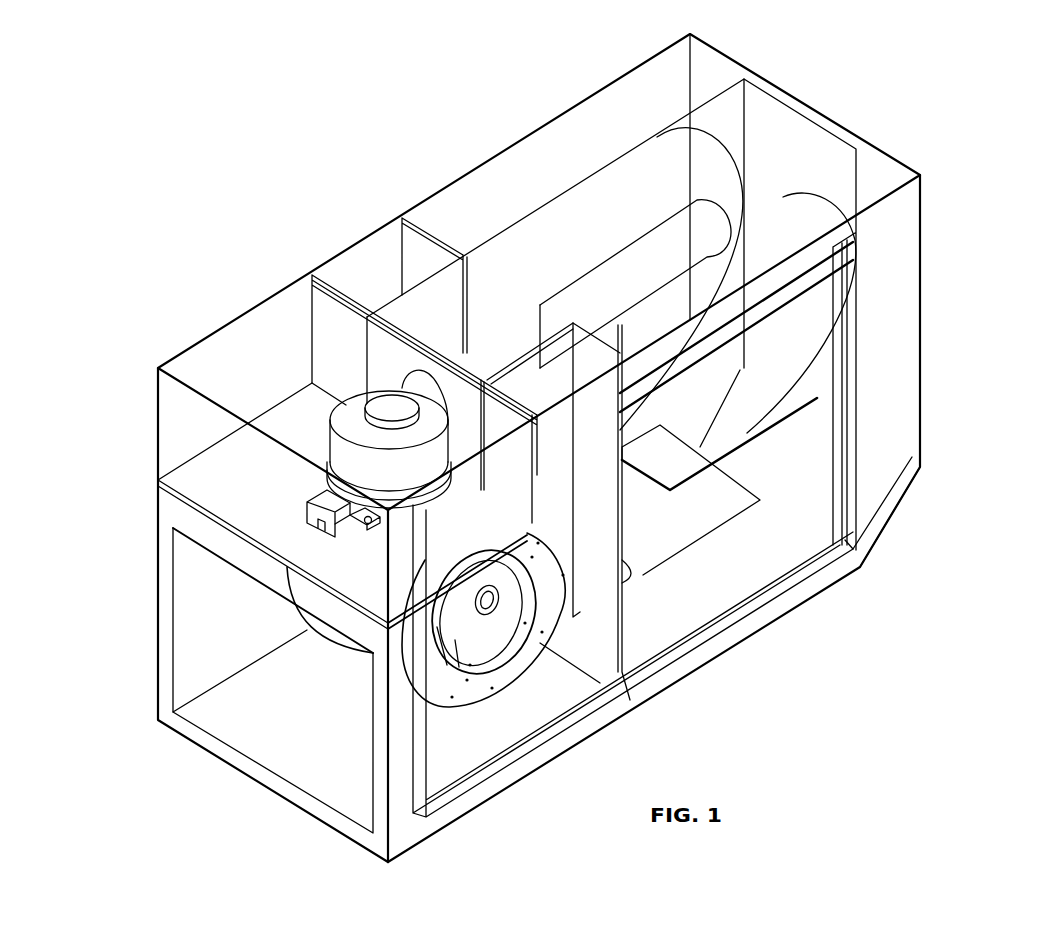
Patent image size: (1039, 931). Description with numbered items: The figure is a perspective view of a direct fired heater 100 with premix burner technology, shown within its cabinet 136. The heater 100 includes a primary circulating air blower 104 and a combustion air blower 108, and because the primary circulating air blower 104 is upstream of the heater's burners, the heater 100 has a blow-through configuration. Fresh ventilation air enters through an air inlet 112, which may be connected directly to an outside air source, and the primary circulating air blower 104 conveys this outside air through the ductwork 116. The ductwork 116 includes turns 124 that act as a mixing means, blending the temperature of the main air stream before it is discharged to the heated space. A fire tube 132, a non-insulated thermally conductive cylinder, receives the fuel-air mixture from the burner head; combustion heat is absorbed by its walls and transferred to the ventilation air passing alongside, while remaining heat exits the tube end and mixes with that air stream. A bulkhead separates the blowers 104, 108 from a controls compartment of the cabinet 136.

The heater 100 is at (148, 108).
The primary circulating air blower 104 is at (500, 667).
The combustion air blower 108 is at (349, 432).
The air inlet 112 is at (256, 712).
The ductwork 116 is at (760, 153).
The turns 124 is at (833, 202).
The fire tube 132 is at (533, 327).
The cabinet 136 is at (927, 458).